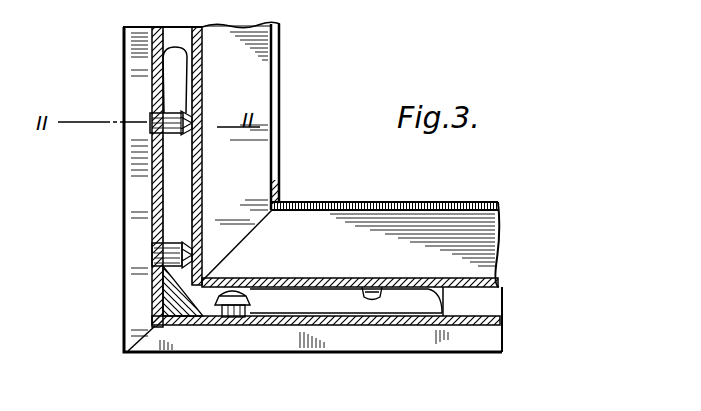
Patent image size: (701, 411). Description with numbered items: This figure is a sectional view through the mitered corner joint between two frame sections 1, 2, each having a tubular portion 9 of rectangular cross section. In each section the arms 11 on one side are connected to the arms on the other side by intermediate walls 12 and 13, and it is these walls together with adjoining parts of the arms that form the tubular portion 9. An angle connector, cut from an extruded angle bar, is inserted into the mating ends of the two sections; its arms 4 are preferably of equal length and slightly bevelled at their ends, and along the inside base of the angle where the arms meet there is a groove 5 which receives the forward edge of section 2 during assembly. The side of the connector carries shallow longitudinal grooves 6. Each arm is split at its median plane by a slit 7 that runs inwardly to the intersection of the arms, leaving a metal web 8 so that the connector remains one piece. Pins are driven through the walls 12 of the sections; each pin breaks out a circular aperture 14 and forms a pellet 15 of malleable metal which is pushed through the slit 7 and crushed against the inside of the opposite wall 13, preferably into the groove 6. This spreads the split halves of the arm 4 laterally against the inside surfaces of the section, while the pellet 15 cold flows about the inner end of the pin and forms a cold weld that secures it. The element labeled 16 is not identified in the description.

The mitered section 1 is at (280, 50).
The mitered section 2 is at (364, 203).
The arm 4 is at (178, 172).
The groove 5 is at (136, 352).
The longitudinal groove 6 is at (237, 13).
The slit 7 is at (315, 101).
The web 8 is at (158, 289).
The tubular portion 9 is at (172, 27).
The arm 11 is at (133, 130).
The intermediate wall 12 is at (152, 199).
The intermediate wall 13 is at (198, 190).
The aperture 14 is at (374, 318).
The pellet 15 is at (198, 95).
The screw 16 is at (229, 328).